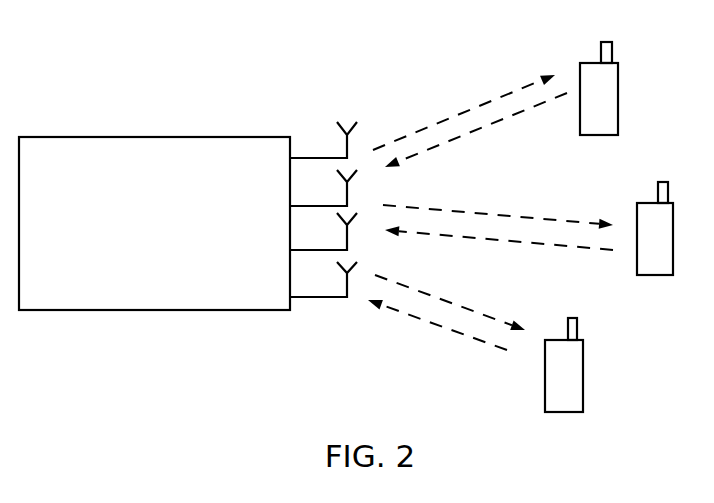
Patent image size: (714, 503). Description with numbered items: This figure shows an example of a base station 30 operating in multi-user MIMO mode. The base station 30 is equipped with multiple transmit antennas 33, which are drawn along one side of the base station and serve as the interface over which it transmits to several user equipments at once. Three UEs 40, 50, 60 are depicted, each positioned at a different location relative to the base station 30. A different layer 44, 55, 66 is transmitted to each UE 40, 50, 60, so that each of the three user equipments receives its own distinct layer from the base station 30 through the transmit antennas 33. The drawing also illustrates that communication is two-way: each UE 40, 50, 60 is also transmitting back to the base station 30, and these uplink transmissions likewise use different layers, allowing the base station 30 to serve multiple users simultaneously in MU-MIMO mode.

The base station 30 is at (154, 223).
The transmit antennas 33 is at (343, 302).
The UE 40 is at (599, 88).
The layer 44 is at (473, 102).
The UE 50 is at (655, 228).
The layer 55 is at (482, 208).
The UE 60 is at (564, 365).
The layer 66 is at (445, 292).